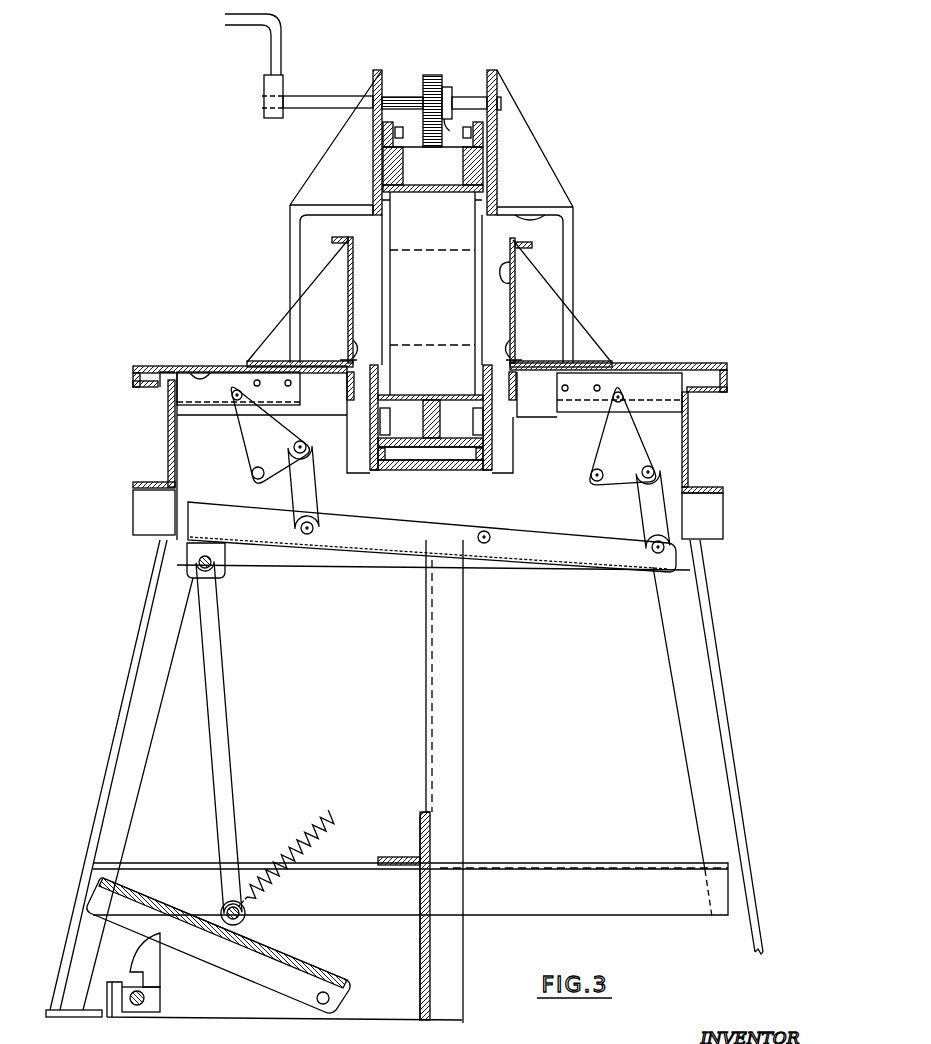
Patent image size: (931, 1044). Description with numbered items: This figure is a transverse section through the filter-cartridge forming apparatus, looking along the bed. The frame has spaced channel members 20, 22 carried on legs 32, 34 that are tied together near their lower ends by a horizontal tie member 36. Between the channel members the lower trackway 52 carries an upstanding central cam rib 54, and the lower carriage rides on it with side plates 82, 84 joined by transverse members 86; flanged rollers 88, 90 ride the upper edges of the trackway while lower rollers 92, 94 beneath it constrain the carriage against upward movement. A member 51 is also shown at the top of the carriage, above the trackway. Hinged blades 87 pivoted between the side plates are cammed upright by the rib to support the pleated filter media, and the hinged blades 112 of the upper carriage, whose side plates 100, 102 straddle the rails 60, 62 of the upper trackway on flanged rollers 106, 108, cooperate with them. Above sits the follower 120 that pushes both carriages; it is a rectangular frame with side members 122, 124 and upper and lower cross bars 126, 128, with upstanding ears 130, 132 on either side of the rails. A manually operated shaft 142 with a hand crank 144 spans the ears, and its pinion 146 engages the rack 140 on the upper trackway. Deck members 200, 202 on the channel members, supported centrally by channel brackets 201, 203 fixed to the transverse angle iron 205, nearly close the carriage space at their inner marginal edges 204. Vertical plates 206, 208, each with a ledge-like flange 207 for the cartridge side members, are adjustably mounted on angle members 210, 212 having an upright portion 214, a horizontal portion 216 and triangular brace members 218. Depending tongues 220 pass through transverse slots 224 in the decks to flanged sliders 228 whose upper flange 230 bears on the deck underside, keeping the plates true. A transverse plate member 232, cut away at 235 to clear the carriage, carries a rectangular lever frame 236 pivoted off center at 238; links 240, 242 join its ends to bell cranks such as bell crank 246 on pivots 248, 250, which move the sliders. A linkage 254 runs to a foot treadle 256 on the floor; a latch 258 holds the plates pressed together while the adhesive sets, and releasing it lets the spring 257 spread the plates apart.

The channel member 20 is at (168, 415).
The channel member 22 is at (688, 471).
The leg 32 is at (140, 740).
The leg 34 is at (670, 656).
The horizontal tie member 36 is at (633, 883).
The upper plate 51 is at (432, 395).
The lower trackway 52 is at (432, 420).
The cam rib 54 is at (448, 440).
The rail 60 is at (392, 165).
The rail 62 is at (473, 165).
The side plate 82 is at (372, 468).
The side plate 84 is at (490, 470).
The transverse member 86 is at (420, 470).
The hinged blade 87 is at (462, 292).
The flanged roller 88 is at (395, 470).
The flanged roller 90 is at (478, 420).
The roller 92 is at (378, 470).
The roller 94 is at (486, 475).
The side plate 100 is at (373, 176).
The side plate 102 is at (497, 175).
The flanged roller 106 is at (386, 135).
The flanged roller 108 is at (480, 136).
The hinged blade 112 is at (460, 240).
The follower 120 is at (560, 195).
The side member 122 is at (290, 224).
The side member 124 is at (573, 232).
The upper cross bar 126 is at (323, 213).
The lower cross bar 128 is at (428, 390).
The ear 130 is at (381, 84).
The ear 132 is at (497, 90).
The rack 140 is at (452, 100).
The shaft 142 is at (447, 130).
The hand crank 144 is at (266, 57).
The pinion 146 is at (429, 75).
The deck member 200 is at (162, 366).
The channel bracket 201 is at (318, 400).
The deck member 202 is at (680, 365).
The channel bracket 203 is at (531, 425).
The inner marginal edge 204 is at (347, 375).
The transverse angle iron 205 is at (143, 511).
The vertical plate 206 is at (297, 200).
The ledge-like flange 207 is at (350, 345).
The vertical plate 208 is at (520, 245).
The angle member 210 is at (349, 266).
The angle member 212 is at (515, 318).
The upright portion 214 is at (516, 285).
The horizontal portion 216 is at (330, 360).
The triangular brace member 218 is at (280, 318).
The depending tongue 220 is at (270, 360).
The transverse slot 224 is at (250, 440).
The flanged slider 228 is at (196, 418).
The upper flange 230 is at (198, 366).
The transverse plate member 232 is at (540, 510).
The cut away 235 is at (349, 455).
The lever frame 236 is at (600, 547).
The pivot 238 is at (486, 543).
The link 240 is at (312, 525).
The link 242 is at (656, 500).
The bell crank 246 is at (630, 450).
The pivot 248 is at (255, 472).
The pivot 250 is at (592, 474).
The linkage 254 is at (218, 718).
The foot treadle 256 is at (298, 970).
The spring 257 is at (290, 850).
The latch 258 is at (150, 1000).